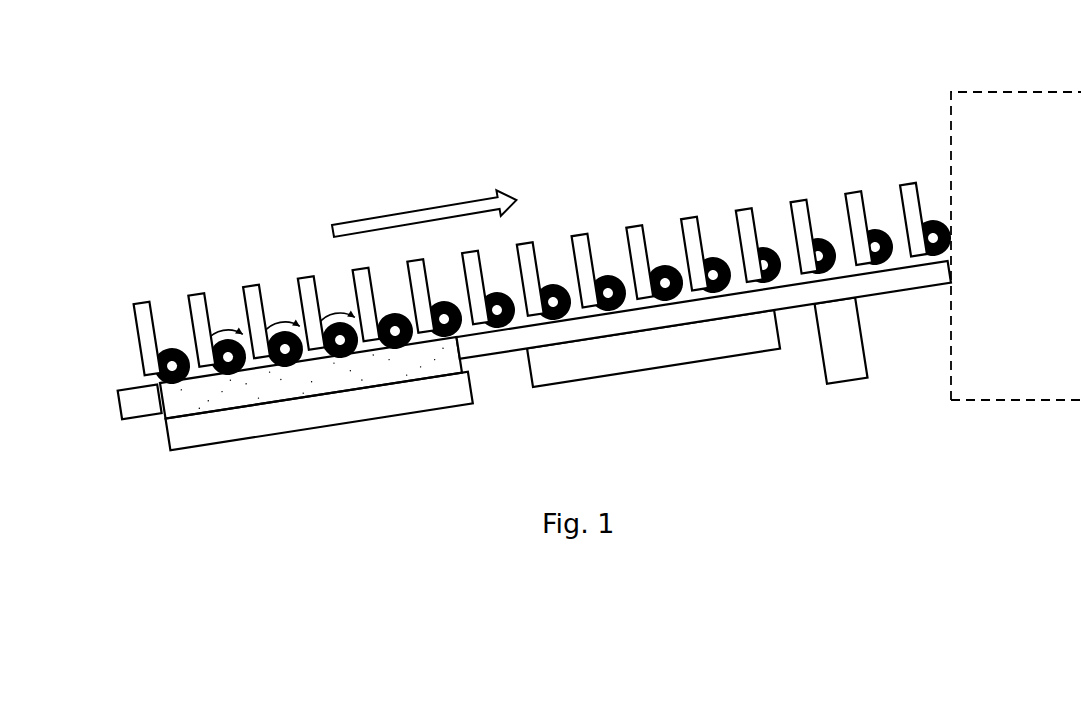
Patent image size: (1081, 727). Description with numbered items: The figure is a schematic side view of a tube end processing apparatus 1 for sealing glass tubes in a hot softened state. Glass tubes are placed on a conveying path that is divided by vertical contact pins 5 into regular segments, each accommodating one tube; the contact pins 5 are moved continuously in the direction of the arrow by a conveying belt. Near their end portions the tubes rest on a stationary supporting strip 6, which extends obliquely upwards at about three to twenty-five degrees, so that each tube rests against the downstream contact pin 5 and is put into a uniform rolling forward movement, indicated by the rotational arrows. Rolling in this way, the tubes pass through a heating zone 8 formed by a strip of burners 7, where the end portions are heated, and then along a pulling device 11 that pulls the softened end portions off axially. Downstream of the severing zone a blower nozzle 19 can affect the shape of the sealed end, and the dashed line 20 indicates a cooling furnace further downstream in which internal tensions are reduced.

The tube end processing apparatus 1 is at (447, 88).
The contact pins 5 is at (140, 330).
The supporting strip 6 is at (127, 405).
The strip of burners 7 is at (178, 443).
The heating zone 8 is at (160, 422).
The pulling device 11 is at (545, 382).
The blower nozzle 19 is at (827, 373).
The dashed line (cooling furnace) 20 is at (997, 92).